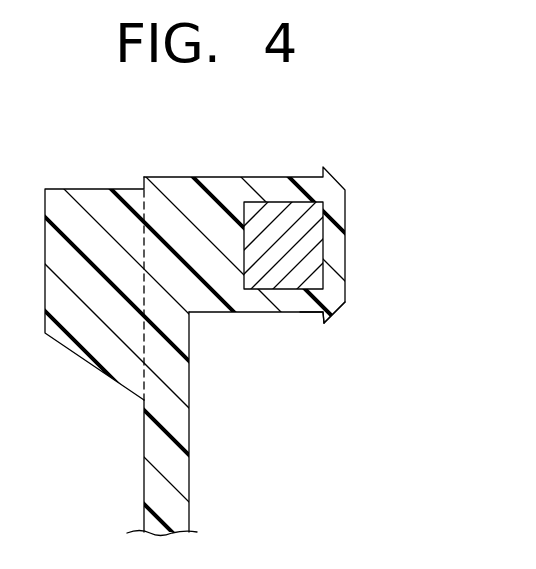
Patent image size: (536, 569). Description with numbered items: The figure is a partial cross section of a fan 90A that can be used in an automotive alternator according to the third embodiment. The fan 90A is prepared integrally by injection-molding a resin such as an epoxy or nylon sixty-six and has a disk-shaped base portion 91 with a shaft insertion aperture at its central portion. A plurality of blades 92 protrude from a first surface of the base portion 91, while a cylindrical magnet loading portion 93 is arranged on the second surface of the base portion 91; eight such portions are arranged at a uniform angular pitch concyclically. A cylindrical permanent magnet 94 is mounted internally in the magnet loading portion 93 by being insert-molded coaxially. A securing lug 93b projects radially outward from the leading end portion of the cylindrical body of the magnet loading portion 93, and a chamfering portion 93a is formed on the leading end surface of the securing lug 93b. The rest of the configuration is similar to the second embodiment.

The fan 90A is at (242, 130).
The base portion 91 is at (182, 437).
The blades 92 is at (90, 192).
The magnet loading portion 93 is at (223, 293).
The chamfering portion 93a is at (338, 313).
The securing lug 93b is at (317, 318).
The permanent magnet 94 is at (275, 275).